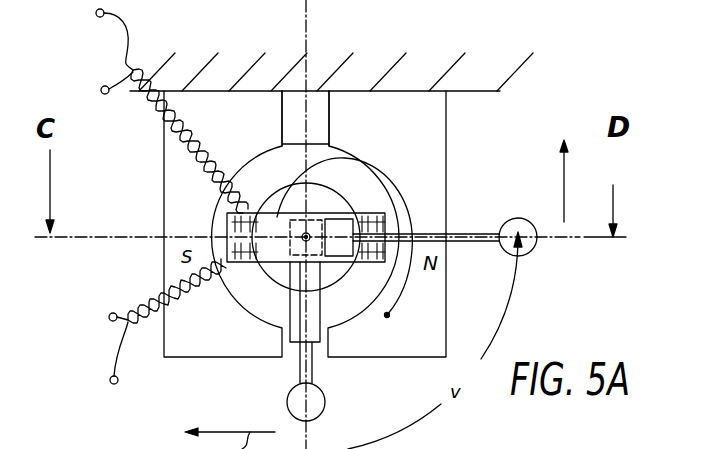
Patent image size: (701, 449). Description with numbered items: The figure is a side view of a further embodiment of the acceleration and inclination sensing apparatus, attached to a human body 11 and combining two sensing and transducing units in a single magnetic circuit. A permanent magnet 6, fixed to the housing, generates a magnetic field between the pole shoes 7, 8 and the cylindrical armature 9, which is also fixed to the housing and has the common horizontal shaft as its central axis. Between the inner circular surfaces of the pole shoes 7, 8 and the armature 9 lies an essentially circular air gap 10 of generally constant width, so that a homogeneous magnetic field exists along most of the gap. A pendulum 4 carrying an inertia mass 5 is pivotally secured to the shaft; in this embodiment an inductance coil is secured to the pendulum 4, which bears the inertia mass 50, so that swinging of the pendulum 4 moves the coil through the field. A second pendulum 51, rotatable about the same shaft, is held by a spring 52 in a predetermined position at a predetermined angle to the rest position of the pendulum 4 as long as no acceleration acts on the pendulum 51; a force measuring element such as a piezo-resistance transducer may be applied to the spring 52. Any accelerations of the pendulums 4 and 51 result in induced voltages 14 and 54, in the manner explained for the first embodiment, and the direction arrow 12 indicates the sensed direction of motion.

The pendulum 4 is at (300, 303).
The inertia mass 5 is at (326, 400).
The permanent magnet 6 is at (331, 117).
The pole shoe 7 is at (217, 344).
The pole shoe 8 is at (409, 344).
The armature 9 is at (334, 237).
The air gap 10 is at (366, 178).
The human body 11 is at (430, 38).
The y-direction arrow 12 is at (563, 180).
The induced voltage 14 is at (88, 72).
The inertia mass 50 is at (531, 251).
The pendulum 51 is at (472, 233).
The spring 52 is at (404, 205).
The induced voltage 54 is at (98, 369).